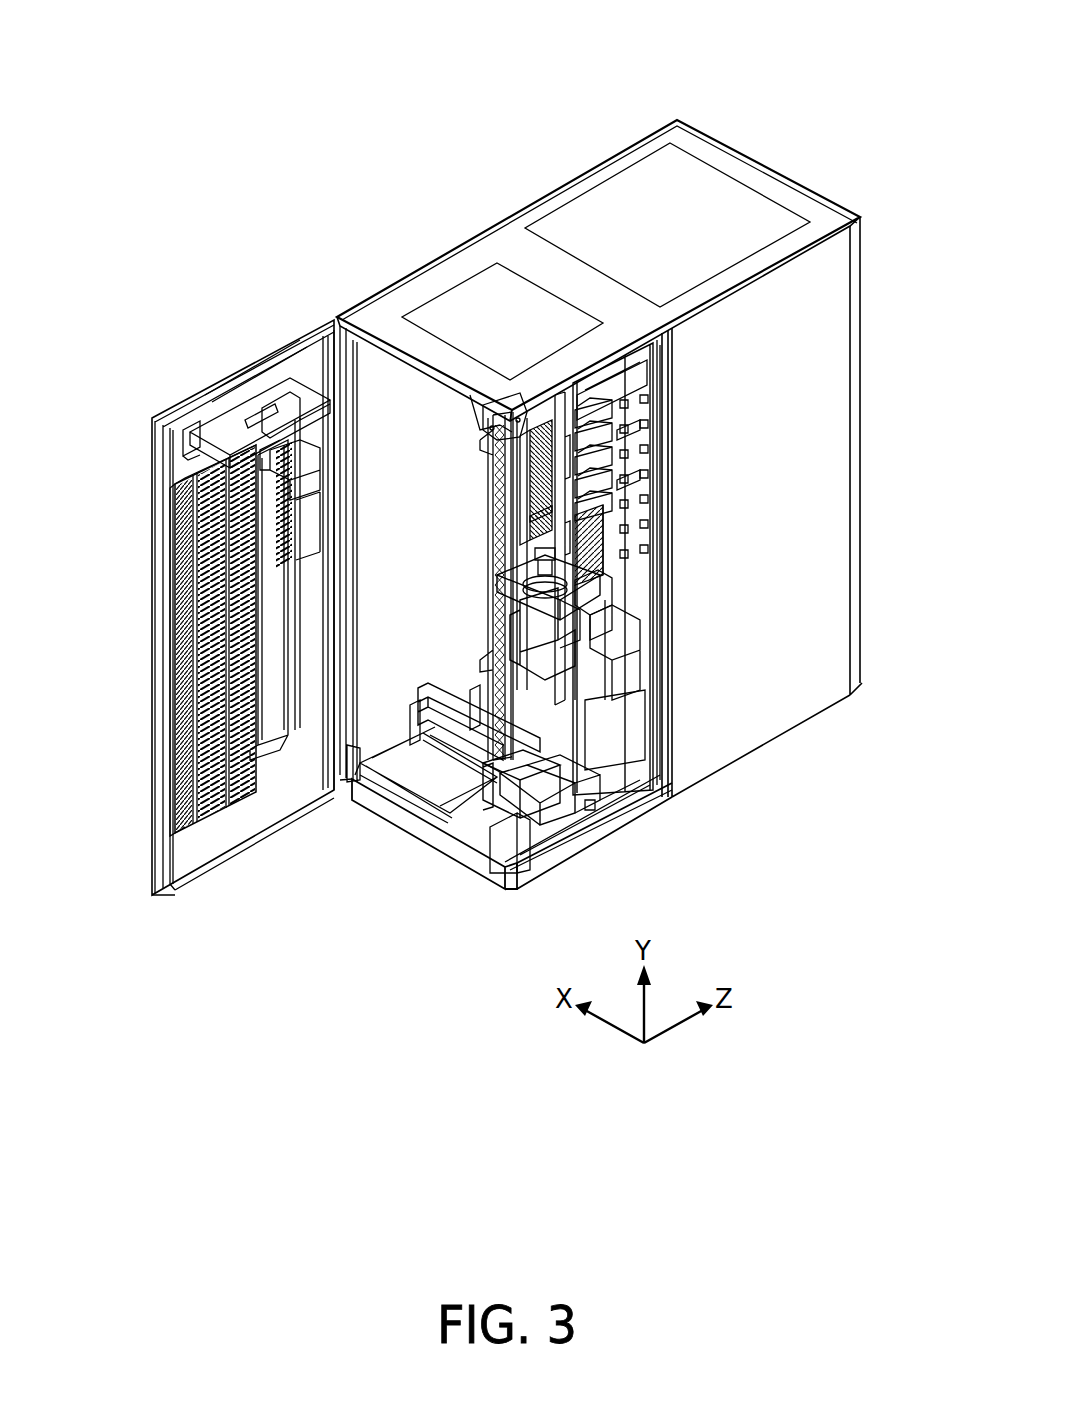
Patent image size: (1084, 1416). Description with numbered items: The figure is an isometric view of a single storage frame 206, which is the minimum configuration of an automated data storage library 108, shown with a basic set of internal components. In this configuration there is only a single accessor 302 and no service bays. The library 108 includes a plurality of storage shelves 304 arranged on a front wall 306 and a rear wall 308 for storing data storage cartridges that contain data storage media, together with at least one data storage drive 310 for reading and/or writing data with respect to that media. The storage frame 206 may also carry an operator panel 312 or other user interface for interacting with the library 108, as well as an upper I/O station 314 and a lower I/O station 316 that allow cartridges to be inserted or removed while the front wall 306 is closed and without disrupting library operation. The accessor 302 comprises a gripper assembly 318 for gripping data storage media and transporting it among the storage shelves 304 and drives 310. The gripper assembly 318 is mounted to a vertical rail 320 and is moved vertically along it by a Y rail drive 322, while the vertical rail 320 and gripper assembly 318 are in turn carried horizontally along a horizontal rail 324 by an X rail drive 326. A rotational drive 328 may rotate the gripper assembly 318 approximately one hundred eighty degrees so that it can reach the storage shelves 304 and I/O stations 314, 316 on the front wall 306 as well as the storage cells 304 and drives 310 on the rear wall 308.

The automated data storage library 108 is at (846, 84).
The storage frame 206 is at (680, 178).
The accessor 302 is at (546, 790).
The storage shelves 304 is at (193, 687).
The front wall 306 is at (160, 556).
The rear wall 308 is at (495, 484).
The data storage drive 310 is at (605, 429).
The operator panel 312 is at (320, 447).
The upper I/O station 314 is at (293, 470).
The lower I/O station 316 is at (293, 630).
The gripper assembly 318 is at (612, 625).
The vertical rail 320 is at (520, 665).
The Y rail drive 322 is at (493, 590).
The horizontal rail 324 is at (430, 694).
The X rail drive 326 is at (500, 781).
The rotational drive 328 is at (597, 590).